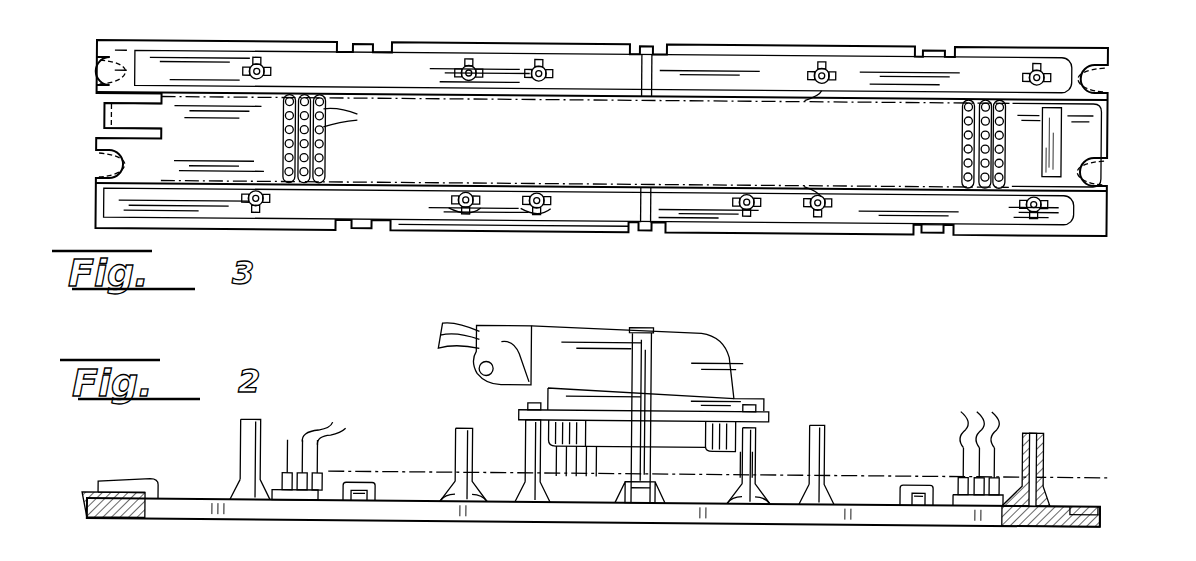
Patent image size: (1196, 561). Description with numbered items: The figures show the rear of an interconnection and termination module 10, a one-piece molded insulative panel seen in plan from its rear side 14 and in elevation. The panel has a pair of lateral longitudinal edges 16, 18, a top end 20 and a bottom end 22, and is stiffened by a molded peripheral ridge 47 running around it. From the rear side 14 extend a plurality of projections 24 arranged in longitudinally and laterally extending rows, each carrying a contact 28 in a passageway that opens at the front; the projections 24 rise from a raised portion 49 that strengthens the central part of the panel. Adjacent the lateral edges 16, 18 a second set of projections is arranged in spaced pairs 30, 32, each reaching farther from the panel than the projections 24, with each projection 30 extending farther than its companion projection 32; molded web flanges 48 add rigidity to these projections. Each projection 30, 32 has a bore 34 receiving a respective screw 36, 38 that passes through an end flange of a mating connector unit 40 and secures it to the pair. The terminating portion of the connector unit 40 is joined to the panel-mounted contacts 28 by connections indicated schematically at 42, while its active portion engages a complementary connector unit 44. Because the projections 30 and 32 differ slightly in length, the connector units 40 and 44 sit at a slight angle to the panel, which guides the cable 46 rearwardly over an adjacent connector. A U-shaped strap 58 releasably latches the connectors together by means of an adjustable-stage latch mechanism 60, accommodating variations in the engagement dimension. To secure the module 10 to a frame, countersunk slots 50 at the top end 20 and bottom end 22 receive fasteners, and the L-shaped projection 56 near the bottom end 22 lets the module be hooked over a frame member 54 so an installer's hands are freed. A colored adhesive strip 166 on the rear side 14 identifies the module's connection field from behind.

In FIG. 3, the interconnection and termination module 10 is at (1068, 247).
In FIG. 2, the interconnection and termination module 10 is at (1110, 494).
In FIG. 3, the rear side 14 is at (232, 160).
In FIG. 3, the lateral longitudinal edge 16 is at (520, 232).
In FIG. 2, the lateral longitudinal edge 16 is at (547, 515).
In FIG. 3, the lateral longitudinal edge 18 is at (584, 42).
In FIG. 3, the top end 20 is at (1108, 150).
In FIG. 2, the top end 20 is at (1102, 520).
In FIG. 3, the bottom end 22 is at (97, 200).
In FIG. 3, the projections 24 is at (286, 119).
In FIG. 2, the projections 24 is at (288, 480).
In FIG. 3, the contacts 28 is at (356, 112).
In FIG. 2, the contacts 28 is at (650, 423).
In FIG. 3, the projections 30 is at (262, 62).
In FIG. 2, the projections 30 is at (245, 450).
In FIG. 3, the projections 32 is at (462, 64).
In FIG. 2, the projections 32 is at (458, 442).
In FIG. 3, the bore 34 is at (816, 196).
In FIG. 2, the bore 34 is at (1035, 434).
In FIG. 2, the screw 36 is at (523, 406).
In FIG. 2, the screw 38 is at (760, 414).
In FIG. 2, the mating connector unit 40 is at (682, 436).
In FIG. 2, the connections 42 is at (600, 465).
In FIG. 2, the complementary connector unit 44 is at (602, 345).
In FIG. 2, the cable 46 is at (440, 342).
In FIG. 3, the peripheral ridge 47 is at (907, 236).
In FIG. 2, the peripheral ridge 47 is at (1086, 505).
In FIG. 3, the web flanges 48 is at (535, 205).
In FIG. 2, the web flanges 48 is at (447, 500).
In FIG. 2, the raised portion 49 is at (286, 500).
In FIG. 3, the countersunk slots 50 is at (97, 72).
In FIG. 2, the frame member 54 is at (90, 493).
In FIG. 3, the key tab 56 is at (120, 114).
In FIG. 2, the key tab 56 is at (140, 482).
In FIG. 2, the U-shaped strap 58 is at (648, 352).
In FIG. 2, the adjustable-stage latch mechanism 60 is at (637, 511).
In FIG. 3, the adhesive strip 166 is at (1058, 115).